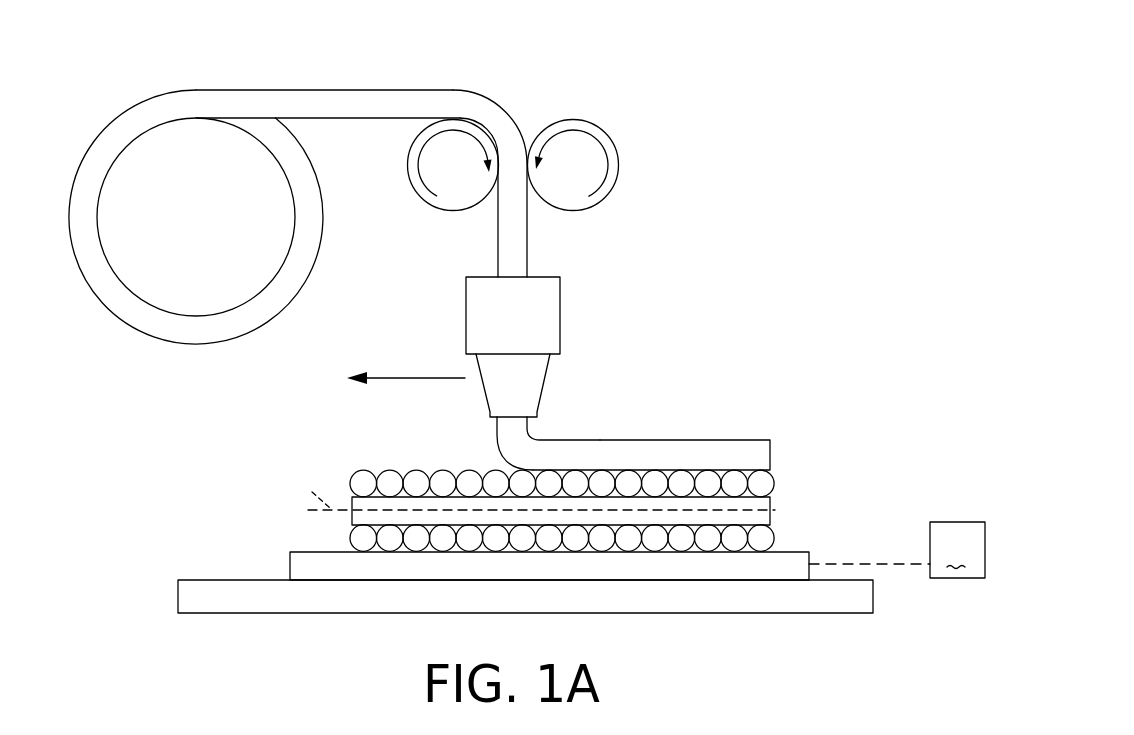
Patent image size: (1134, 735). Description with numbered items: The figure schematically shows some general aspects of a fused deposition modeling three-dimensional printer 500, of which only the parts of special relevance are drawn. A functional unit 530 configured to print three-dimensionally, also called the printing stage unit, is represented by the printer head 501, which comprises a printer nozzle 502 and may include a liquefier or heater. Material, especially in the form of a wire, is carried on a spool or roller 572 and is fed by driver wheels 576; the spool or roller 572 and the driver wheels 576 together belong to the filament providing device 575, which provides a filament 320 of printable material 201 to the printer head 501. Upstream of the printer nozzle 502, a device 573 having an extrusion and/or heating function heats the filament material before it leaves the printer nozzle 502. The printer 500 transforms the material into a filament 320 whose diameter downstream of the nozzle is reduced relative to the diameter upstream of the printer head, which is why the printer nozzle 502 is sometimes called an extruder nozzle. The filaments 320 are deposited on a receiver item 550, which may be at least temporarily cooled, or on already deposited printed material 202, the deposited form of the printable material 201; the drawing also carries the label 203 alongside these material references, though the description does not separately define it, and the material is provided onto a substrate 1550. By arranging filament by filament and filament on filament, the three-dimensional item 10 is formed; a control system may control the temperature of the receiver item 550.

The 3D item 10 is at (843, 465).
The printable material 201 is at (518, 426).
The printed material 202 is at (740, 450).
The extruded fiber-reinforced material 203 is at (677, 422).
The filament 320 is at (745, 512).
The 3D printer 500 is at (808, 258).
The printer head 501 is at (548, 322).
The printer nozzle 502 is at (469, 427).
The functional unit configured to 3D print 530 is at (164, 392).
The receiver item 550 is at (254, 565).
The spool or roller 572 is at (132, 88).
The extrusion and/or heating device 573 is at (601, 246).
The filament providing device 575 is at (640, 120).
The driver wheels 576 is at (523, 84).
The substrate 1550 is at (252, 517).